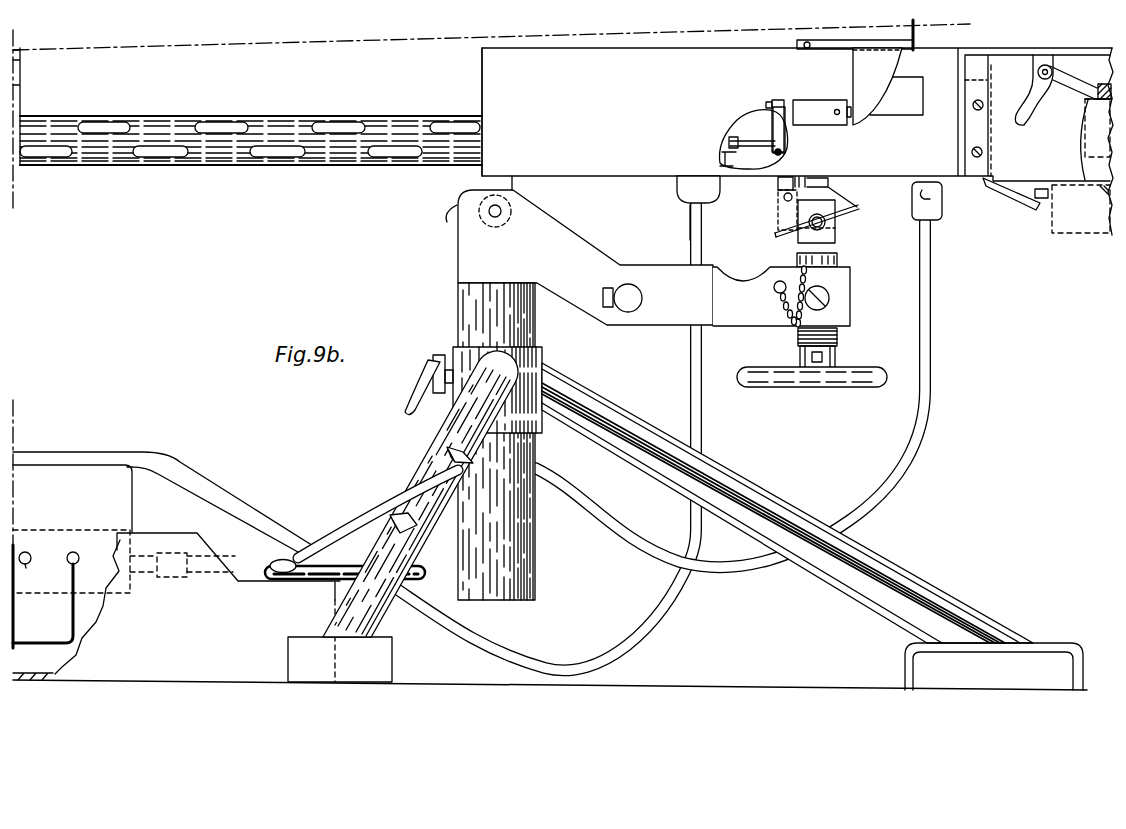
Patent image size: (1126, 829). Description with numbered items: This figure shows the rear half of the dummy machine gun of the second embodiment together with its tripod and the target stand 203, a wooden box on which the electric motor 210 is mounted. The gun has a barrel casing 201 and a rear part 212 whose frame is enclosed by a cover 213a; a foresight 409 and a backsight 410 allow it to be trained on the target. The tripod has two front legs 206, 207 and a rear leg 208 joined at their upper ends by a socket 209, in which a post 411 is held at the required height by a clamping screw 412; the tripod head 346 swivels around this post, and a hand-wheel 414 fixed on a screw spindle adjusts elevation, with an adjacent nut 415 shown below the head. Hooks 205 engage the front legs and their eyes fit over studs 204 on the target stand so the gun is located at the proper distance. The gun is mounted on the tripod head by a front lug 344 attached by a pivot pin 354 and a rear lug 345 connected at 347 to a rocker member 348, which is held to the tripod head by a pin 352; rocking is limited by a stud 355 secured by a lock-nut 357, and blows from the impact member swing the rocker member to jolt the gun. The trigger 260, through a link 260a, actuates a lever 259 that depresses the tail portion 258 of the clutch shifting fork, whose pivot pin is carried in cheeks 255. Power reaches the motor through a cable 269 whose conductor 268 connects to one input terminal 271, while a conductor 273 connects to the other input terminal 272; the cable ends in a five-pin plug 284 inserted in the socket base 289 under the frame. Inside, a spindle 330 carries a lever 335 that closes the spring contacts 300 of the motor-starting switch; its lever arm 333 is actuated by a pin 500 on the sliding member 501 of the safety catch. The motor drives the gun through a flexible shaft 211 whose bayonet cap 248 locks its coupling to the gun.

The barrel casing 201 is at (258, 116).
The target stand 203 is at (188, 676).
The studs 204 is at (292, 557).
The hooks 205 is at (318, 587).
The front leg 206 is at (420, 470).
The front leg 207 is at (443, 433).
The rear leg 208 is at (878, 561).
The socket 209 is at (542, 357).
The electric motor 210 is at (100, 470).
The flexible shaft 211 is at (933, 355).
The rear part of the gun 212 is at (482, 80).
The cover 213a is at (797, 141).
The bayonet cap 248 is at (937, 222).
The cheeks 255 is at (992, 65).
The tail portion 258 is at (1013, 195).
The lever 259 is at (1042, 200).
The trigger 260 is at (1030, 118).
The link 260a is at (1090, 160).
The conductor 268 is at (21, 551).
The cable 269 is at (230, 494).
The input terminal 271 is at (27, 566).
The input terminal 272 is at (76, 551).
The conductor 273 is at (78, 645).
The five-pin plug 284 is at (690, 204).
The five-pin socket base 289 is at (700, 181).
The spring contacts 300 is at (722, 158).
The spindle 330 is at (782, 154).
The lever arm 333 is at (786, 134).
The lever 335 is at (737, 142).
The lug 344 is at (488, 182).
The lug 345 is at (782, 183).
The tripod head 346 is at (458, 232).
The connection 347 is at (783, 202).
The rocker member 348 is at (783, 224).
The pin 352 is at (823, 226).
The pivot pin 354 is at (501, 211).
The stud 355 is at (857, 207).
The lock-nut 357 is at (830, 186).
The foresight 409 is at (22, 52).
The backsight 410 is at (918, 29).
The post 411 is at (446, 304).
The clamping screw 412 is at (432, 378).
The hand-wheel 414 is at (818, 388).
The nut 415 is at (837, 339).
The pin 500 is at (791, 90).
The sliding member 501 is at (815, 107).